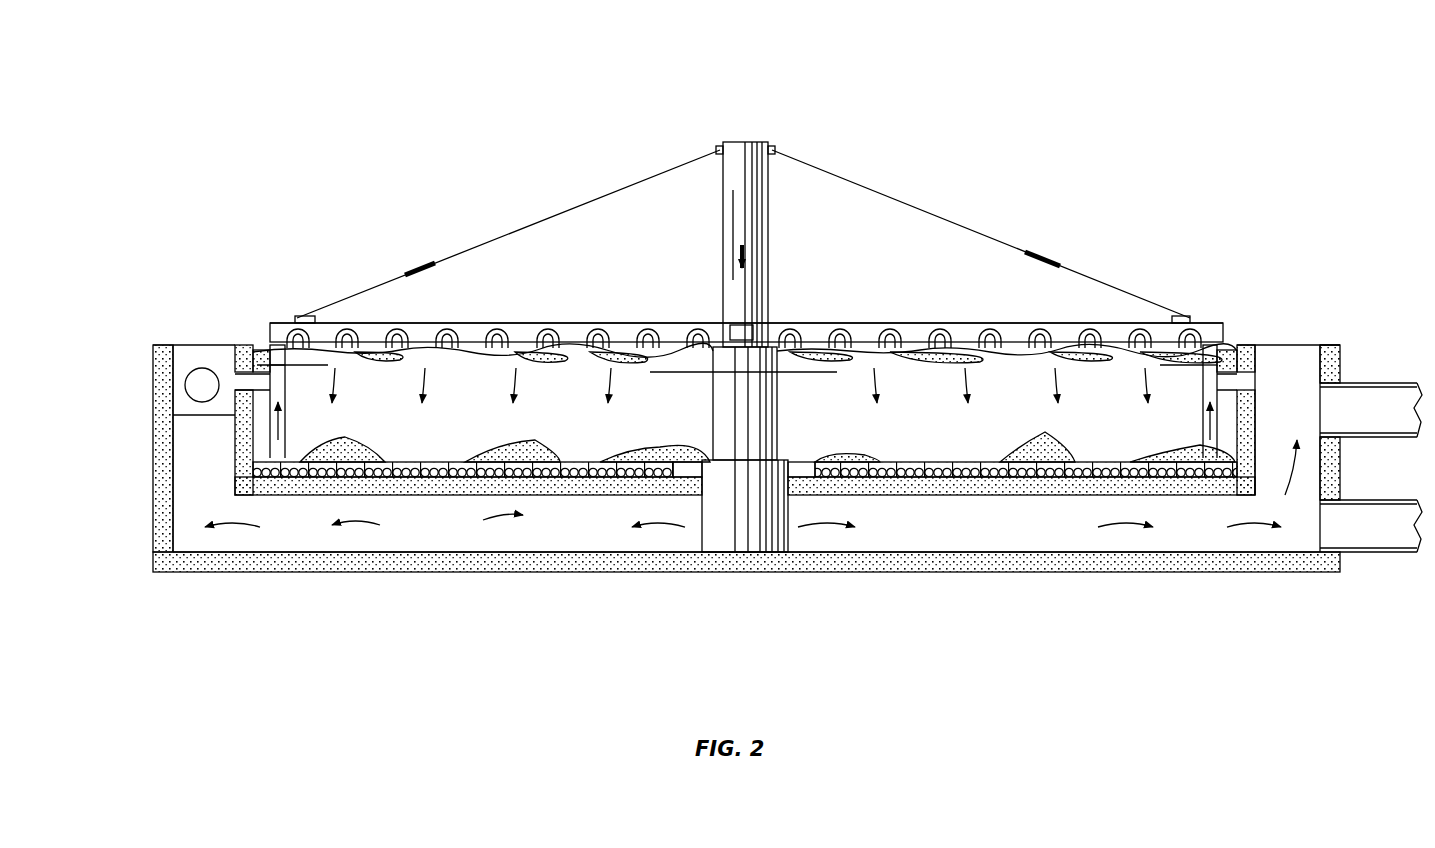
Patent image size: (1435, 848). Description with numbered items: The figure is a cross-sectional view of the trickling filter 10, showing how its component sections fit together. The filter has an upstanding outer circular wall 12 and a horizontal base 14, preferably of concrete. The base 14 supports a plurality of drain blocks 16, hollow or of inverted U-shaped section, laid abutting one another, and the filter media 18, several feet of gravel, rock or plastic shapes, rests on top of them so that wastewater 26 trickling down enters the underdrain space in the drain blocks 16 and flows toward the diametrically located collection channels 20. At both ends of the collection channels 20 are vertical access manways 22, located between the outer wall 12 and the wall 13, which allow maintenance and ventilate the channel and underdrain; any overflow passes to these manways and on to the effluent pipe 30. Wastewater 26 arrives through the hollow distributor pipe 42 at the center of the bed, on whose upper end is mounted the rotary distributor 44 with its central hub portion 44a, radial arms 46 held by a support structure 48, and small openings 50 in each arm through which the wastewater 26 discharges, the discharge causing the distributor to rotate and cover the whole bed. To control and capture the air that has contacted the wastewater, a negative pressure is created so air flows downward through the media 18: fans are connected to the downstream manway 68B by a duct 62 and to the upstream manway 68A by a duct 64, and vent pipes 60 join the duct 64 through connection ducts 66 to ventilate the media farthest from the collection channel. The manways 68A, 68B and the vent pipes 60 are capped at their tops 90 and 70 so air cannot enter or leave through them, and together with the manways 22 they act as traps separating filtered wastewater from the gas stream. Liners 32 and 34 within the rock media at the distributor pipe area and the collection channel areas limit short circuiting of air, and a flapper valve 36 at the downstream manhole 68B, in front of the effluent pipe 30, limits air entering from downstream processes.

The trickling filter 10 is at (698, 647).
The outer circular wall 12 is at (235, 417).
The wall 13 is at (153, 540).
The horizontal base 14 is at (275, 492).
The drain blocks 16 is at (377, 492).
The filter media 18 is at (563, 443).
The collection channels 20 is at (272, 533).
The access manways 22 is at (195, 445).
The wastewater 26 is at (517, 380).
The effluent pipe 30 is at (1388, 537).
The liner 32 is at (812, 345).
The liner 34 is at (317, 362).
The flapper valve 36 is at (1318, 540).
The distributor pipe 42 is at (757, 445).
The rotary distributor 44 is at (768, 285).
The central hub portion 44a is at (750, 340).
The radial arms 46 is at (745, 322).
The support structure 48 is at (738, 212).
The small openings 50 is at (548, 323).
The vent pipes 60 is at (288, 395).
The duct 62 is at (1420, 380).
The duct 64 is at (197, 368).
The connection ducts 66 is at (257, 392).
The upstream access manway 68A is at (217, 345).
The downstream access manway 68B is at (1272, 338).
The cap 70 is at (280, 362).
The cap 90 is at (182, 345).